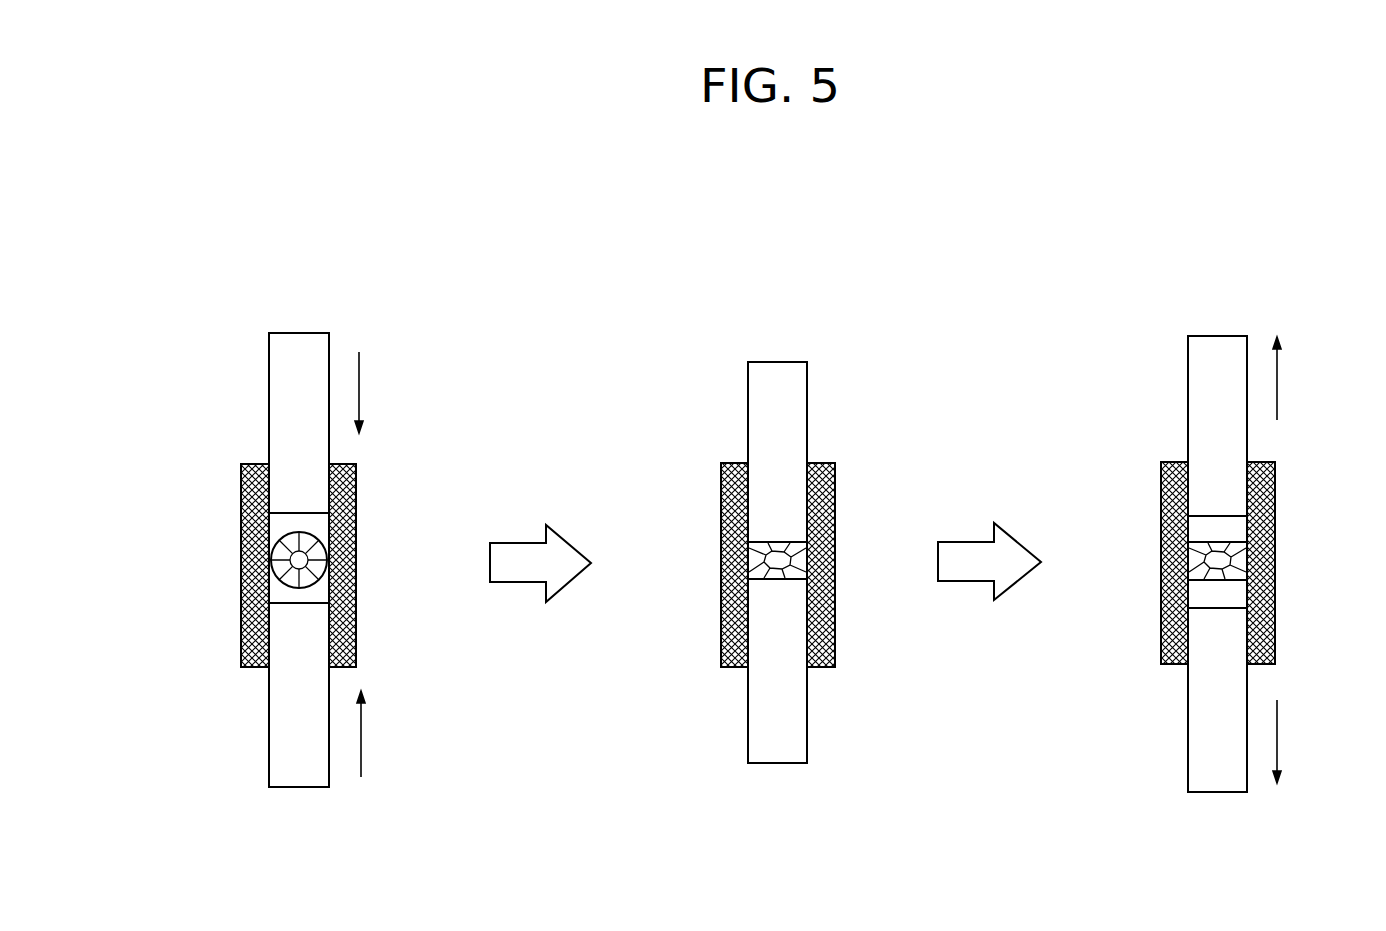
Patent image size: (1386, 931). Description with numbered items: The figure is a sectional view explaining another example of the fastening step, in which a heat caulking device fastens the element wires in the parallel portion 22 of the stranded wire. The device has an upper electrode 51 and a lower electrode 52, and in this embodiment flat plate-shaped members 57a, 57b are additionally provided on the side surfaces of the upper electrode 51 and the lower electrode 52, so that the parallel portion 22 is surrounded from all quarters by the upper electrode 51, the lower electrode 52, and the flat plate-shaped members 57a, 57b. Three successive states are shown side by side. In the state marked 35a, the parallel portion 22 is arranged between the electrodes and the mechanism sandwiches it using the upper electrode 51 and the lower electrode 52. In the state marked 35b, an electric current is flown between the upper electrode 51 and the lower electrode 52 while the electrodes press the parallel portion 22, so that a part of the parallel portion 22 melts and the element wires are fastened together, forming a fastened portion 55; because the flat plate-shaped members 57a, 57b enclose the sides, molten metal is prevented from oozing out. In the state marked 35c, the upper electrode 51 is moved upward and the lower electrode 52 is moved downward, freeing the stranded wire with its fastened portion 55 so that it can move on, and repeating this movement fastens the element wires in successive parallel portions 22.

The sandwiching state of fastening mechanism 35a is at (262, 308).
The heat caulking state of fastening mechanism 35b is at (737, 331).
The release state of fastening mechanism 35c is at (1176, 329).
The upper electrode 51 is at (272, 428).
The lower electrode 52 is at (275, 710).
The flat plate-shaped member 57a is at (241, 508).
The flat plate-shaped member 57b is at (356, 508).
The parallel portion 22 is at (243, 577).
The fastened portion 55 is at (757, 584).